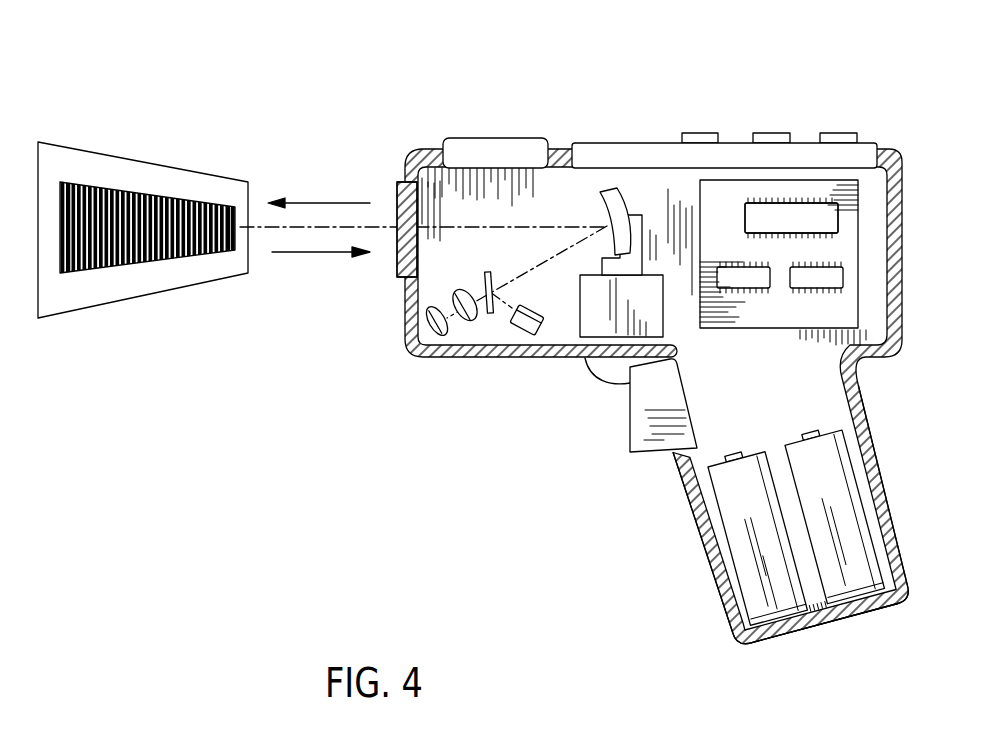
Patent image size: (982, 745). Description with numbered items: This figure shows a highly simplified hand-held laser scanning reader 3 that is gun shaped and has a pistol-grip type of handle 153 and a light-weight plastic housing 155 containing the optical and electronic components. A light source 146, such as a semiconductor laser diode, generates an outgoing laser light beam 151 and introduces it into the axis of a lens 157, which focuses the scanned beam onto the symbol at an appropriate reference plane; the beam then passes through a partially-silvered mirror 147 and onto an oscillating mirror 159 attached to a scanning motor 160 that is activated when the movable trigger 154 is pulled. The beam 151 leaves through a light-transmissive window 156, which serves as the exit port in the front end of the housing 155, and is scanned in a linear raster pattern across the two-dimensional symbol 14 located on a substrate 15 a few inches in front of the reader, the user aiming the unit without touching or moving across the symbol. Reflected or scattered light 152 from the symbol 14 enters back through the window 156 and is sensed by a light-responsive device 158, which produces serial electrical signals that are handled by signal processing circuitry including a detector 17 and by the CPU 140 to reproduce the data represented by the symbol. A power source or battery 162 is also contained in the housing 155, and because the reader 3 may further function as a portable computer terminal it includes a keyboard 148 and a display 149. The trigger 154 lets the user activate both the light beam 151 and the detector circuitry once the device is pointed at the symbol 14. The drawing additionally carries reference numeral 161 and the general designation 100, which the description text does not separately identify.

The substrate 15 is at (207, 181).
The PDF417 symbol 14 is at (217, 207).
The outgoing laser light beam 151 is at (333, 200).
The reflected light 152 is at (333, 255).
The light-transmissive window 156 is at (397, 184).
The display 149 is at (508, 143).
The keyboard 148 is at (800, 145).
The oscillating mirror 159 is at (625, 200).
The CPU 140 is at (767, 213).
The memory integrated circuit 161 is at (861, 198).
The housing 155 is at (905, 265).
The detector 17 is at (837, 306).
The scanning motor 160 is at (647, 378).
The trigger 154 is at (647, 407).
The handle 153 is at (692, 527).
The battery 162 is at (847, 483).
The reader 3 is at (821, 628).
The light source 146 is at (433, 330).
The lens 157 is at (466, 322).
The partially-silvered mirror 147 is at (490, 313).
The light-responsive device 158 is at (531, 338).
The bar code scanner 100 is at (675, 380).